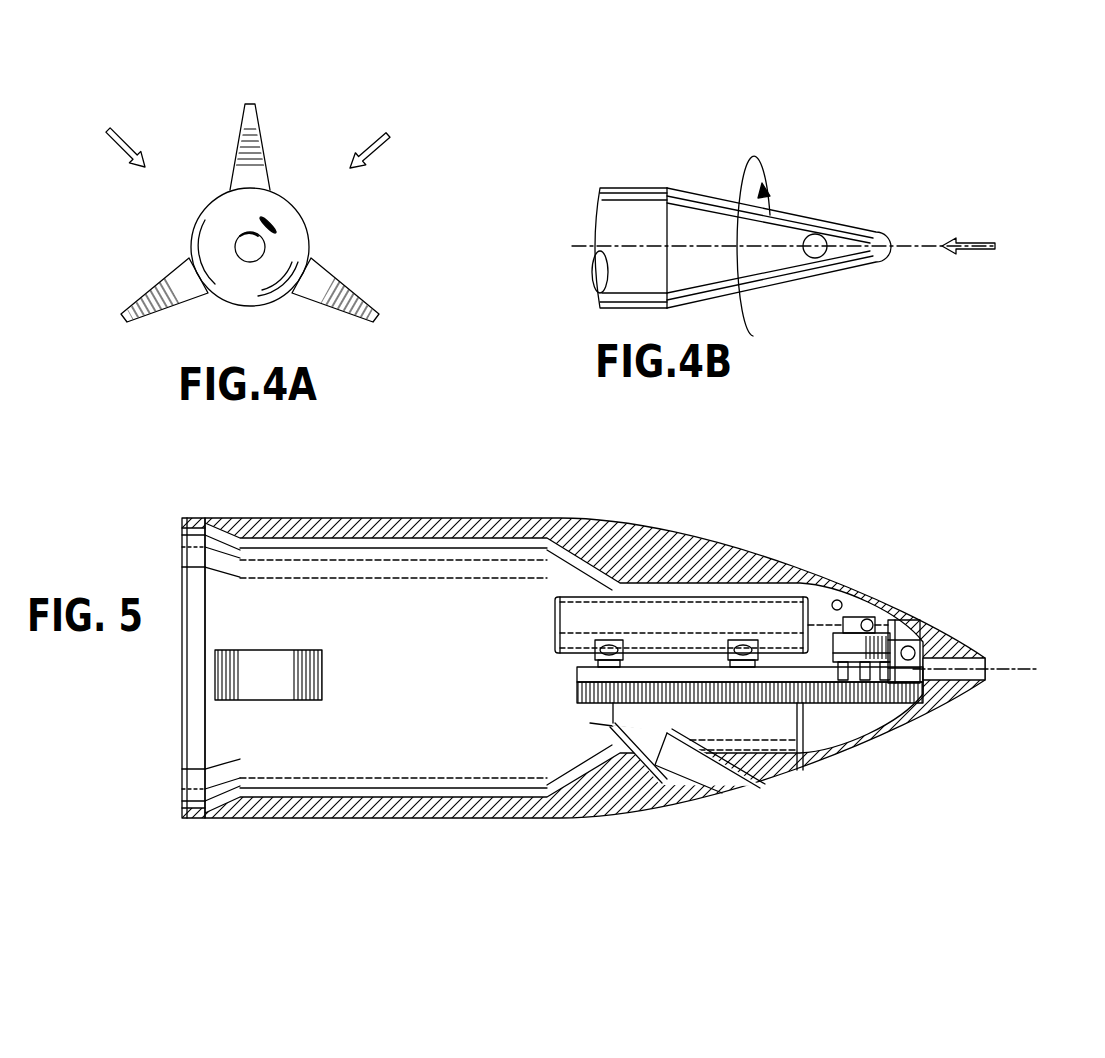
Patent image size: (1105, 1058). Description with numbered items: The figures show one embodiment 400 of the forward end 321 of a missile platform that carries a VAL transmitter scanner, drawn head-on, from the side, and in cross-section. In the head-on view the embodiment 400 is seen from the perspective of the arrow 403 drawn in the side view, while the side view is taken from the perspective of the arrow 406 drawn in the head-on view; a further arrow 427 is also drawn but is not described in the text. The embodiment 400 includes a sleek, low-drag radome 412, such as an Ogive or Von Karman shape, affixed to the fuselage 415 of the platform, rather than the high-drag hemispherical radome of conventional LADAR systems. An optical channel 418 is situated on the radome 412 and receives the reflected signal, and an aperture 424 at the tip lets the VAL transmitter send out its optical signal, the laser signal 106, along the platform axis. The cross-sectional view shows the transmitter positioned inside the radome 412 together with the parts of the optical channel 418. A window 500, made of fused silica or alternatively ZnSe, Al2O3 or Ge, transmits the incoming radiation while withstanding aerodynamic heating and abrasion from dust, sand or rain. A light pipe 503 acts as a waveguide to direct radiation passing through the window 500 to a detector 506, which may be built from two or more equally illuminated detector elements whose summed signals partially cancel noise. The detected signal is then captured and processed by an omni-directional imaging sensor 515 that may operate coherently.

In FIG. 4A, the embodiment 400 is at (203, 113).
In FIG. 4A, the direction of rotation 427 is at (118, 150).
In FIG. 4A, the arrow 406 is at (385, 148).
In FIG. 4A, the radome 412 is at (192, 213).
In FIG. 4B, the radome 412 is at (835, 213).
In FIG. 5, the radome 412 is at (871, 583).
In FIG. 4A, the optical channel 418 is at (273, 223).
In FIG. 4B, the optical channel 418 is at (815, 253).
In FIG. 5, the optical channel 418 is at (715, 825).
In FIG. 4A, the aperture 424 is at (250, 249).
In FIG. 4B, the aperture 424 is at (920, 252).
In FIG. 4B, the fuselage 415 is at (630, 187).
In FIG. 4B, the arrow 403 is at (976, 245).
In FIG. 5, the forward end 321 is at (290, 508).
In FIG. 5, the laser signal 106 is at (1010, 668).
In FIG. 5, the omni-directional imaging sensor 515 is at (255, 695).
In FIG. 5, the detector 506 is at (607, 723).
In FIG. 5, the light pipe 503 is at (660, 790).
In FIG. 5, the window 500 is at (738, 793).